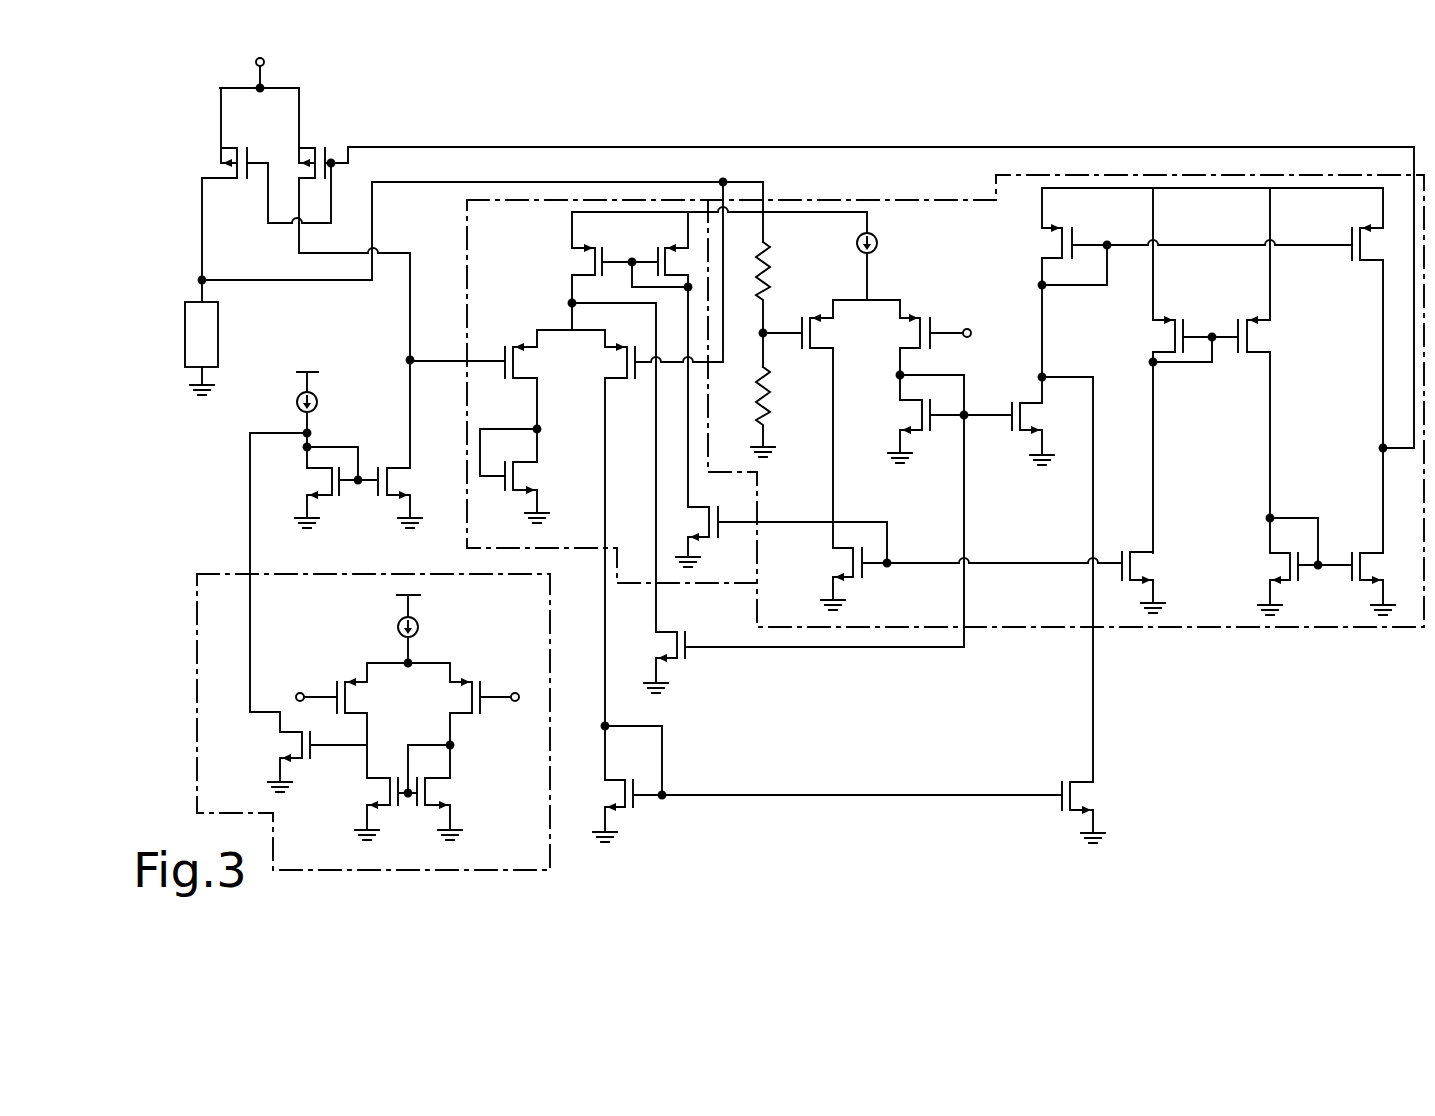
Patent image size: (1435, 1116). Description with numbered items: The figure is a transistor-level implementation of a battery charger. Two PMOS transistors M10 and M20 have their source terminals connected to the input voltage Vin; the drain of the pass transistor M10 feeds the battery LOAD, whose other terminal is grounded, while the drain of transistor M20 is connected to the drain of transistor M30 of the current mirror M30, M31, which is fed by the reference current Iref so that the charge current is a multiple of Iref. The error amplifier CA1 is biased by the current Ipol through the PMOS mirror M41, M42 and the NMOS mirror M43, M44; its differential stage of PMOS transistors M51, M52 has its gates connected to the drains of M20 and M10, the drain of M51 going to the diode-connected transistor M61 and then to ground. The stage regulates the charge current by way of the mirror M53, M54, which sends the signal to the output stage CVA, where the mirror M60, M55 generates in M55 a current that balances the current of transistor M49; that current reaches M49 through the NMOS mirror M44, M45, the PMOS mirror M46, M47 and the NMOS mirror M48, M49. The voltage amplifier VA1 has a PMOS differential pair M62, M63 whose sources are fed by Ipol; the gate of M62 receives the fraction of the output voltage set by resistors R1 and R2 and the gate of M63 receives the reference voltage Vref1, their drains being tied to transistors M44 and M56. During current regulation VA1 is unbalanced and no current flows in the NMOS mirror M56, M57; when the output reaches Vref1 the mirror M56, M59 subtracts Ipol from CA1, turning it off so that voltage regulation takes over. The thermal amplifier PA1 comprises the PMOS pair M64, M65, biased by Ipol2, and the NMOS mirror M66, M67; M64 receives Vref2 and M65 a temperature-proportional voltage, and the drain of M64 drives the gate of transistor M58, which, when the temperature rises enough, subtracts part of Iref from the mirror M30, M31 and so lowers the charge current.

The PMOS transistor M10 is at (245, 195).
The PMOS transistor M20 is at (856, 278).
The input voltage Vin is at (252, 68).
The battery load LOAD is at (246, 348).
The reference current Iref is at (334, 420).
The current mirror transistor M30 is at (424, 498).
The current mirror transistor M31 is at (298, 498).
The error amplifier CA1 is at (465, 278).
The PMOS mirror transistor M41 is at (602, 271).
The PMOS mirror transistor M42 is at (660, 357).
The NMOS mirror transistor M43 is at (783, 522).
The NMOS mirror transistor M44 is at (947, 579).
The PMOS differential transistor M51 is at (507, 383).
The PMOS differential transistor M52 is at (595, 555).
The diode-connected transistor M61 is at (540, 475).
The resistor R1 is at (749, 304).
The resistor R2 is at (751, 412).
The bias current Ipol is at (895, 265).
The PMOS differential transistor M62 is at (831, 408).
The PMOS differential transistor M63 is at (906, 350).
The reference voltage Vref1 is at (964, 313).
The NMOS mirror transistor M56 is at (890, 431).
The NMOS mirror transistor M59 is at (804, 662).
The mirror transistor M53 is at (827, 783).
The mirror transistor M54 is at (1110, 610).
The voltage amplifier VA1 is at (972, 627).
The output stage CVA is at (1260, 632).
The current mirror transistor M60 is at (1196, 284).
The current mirror transistor M55 is at (1352, 370).
The NMOS mirror transistor M57 is at (1055, 421).
The PMOS mirror transistor M46 is at (1168, 370).
The PMOS mirror transistor M47 is at (1284, 370).
The NMOS mirror transistor M45 is at (1168, 582).
The NMOS mirror transistor M48 is at (1304, 570).
The NMOS mirror transistor M49 is at (1361, 568).
The operational amplifier PA1 is at (198, 787).
The transistor M58 is at (295, 760).
The bias current Ipol2 is at (443, 631).
The reference voltage Vref2 is at (294, 676).
The PMOS differential transistor M64 is at (377, 720).
The PMOS differential transistor M65 is at (461, 730).
The NMOS mirror transistor M66 is at (360, 809).
The NMOS mirror transistor M67 is at (463, 809).